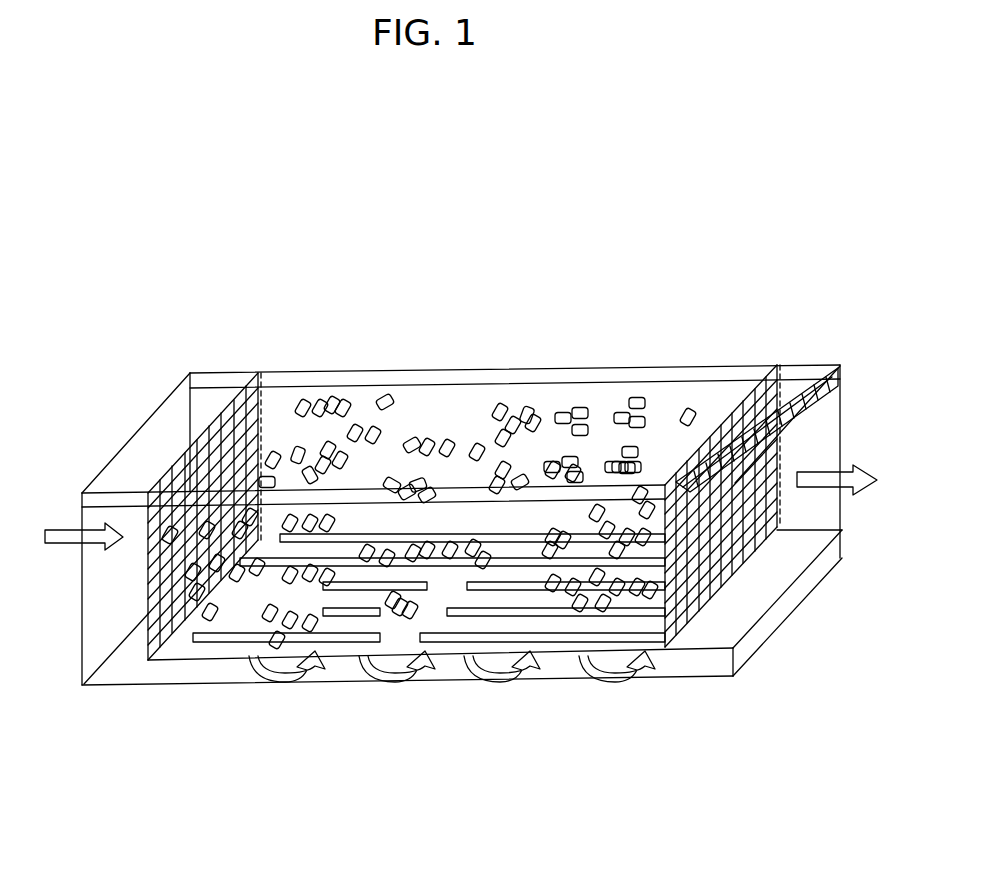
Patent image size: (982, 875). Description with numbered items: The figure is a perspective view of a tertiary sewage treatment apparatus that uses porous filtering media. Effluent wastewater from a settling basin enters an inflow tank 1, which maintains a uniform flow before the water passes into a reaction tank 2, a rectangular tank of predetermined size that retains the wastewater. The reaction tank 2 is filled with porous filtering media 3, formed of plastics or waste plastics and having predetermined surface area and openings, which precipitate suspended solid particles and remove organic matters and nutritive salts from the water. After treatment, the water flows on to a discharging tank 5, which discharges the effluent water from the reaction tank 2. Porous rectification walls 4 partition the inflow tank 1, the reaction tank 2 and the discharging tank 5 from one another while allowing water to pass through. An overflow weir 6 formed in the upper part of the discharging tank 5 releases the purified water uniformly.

The inflow tank 1 is at (120, 668).
The reaction tank 2 is at (548, 395).
The porous filtering media 3 is at (384, 398).
The porous rectification walls 4 is at (247, 372).
The discharging tank 5 is at (810, 364).
The overflow weir 6 is at (813, 388).